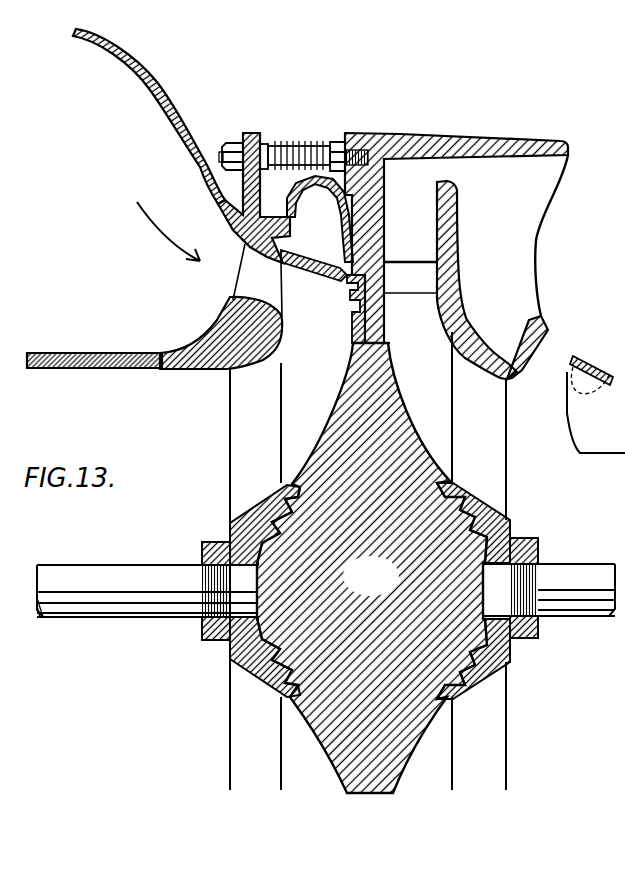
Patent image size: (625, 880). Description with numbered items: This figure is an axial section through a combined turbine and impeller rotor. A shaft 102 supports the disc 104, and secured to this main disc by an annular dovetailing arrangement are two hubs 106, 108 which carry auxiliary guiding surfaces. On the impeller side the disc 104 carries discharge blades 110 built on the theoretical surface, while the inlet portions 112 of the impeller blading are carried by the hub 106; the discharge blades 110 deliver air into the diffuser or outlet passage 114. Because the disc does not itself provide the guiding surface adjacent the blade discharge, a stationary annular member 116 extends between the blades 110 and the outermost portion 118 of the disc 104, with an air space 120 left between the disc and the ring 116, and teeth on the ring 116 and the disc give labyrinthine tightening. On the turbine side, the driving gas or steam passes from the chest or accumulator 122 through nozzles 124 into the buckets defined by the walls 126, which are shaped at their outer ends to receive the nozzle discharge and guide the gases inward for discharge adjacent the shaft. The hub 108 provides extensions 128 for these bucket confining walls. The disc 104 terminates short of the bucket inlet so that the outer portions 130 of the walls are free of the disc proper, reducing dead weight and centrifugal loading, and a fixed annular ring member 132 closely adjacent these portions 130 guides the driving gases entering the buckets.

The shaft 102 is at (135, 572).
The disc 104 is at (372, 568).
The hub 106 is at (480, 510).
The hub 108 is at (247, 510).
The blades 110 is at (413, 328).
The inlet portions 112 is at (484, 446).
The diffuser or outlet passage 114 is at (418, 248).
The stationary annular member 116 is at (382, 287).
The outermost portion of the disc 118 is at (357, 338).
The air space 120 is at (357, 294).
The chest or accumulator 122 is at (143, 106).
The nozzles 124 is at (257, 285).
The walls 126 is at (303, 381).
The extensions 128 is at (237, 395).
The outer portions of the bucket confining walls 130 is at (323, 275).
The fixed annular ring member 132 is at (307, 253).